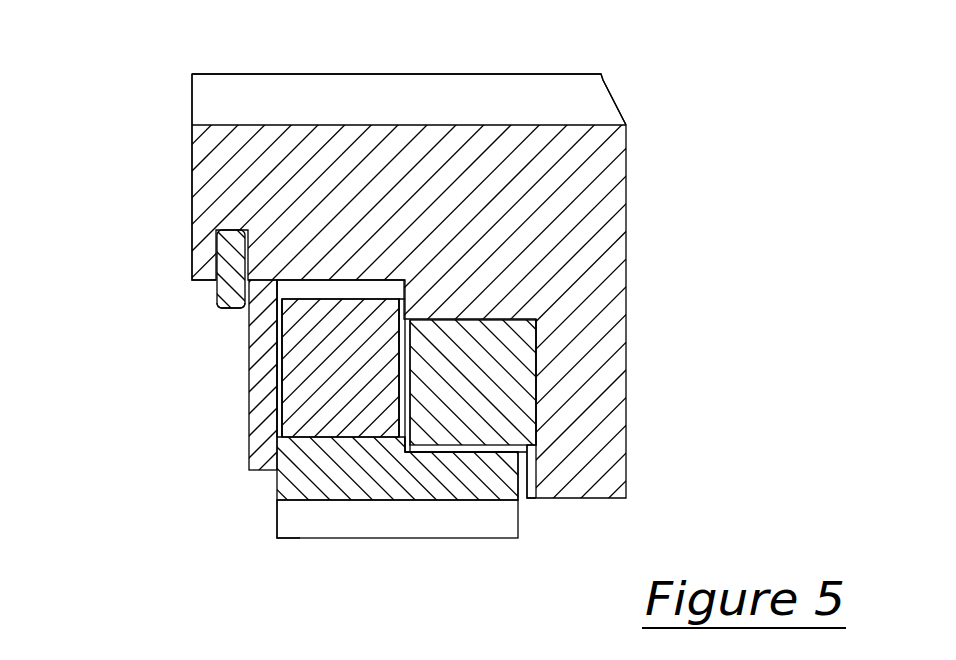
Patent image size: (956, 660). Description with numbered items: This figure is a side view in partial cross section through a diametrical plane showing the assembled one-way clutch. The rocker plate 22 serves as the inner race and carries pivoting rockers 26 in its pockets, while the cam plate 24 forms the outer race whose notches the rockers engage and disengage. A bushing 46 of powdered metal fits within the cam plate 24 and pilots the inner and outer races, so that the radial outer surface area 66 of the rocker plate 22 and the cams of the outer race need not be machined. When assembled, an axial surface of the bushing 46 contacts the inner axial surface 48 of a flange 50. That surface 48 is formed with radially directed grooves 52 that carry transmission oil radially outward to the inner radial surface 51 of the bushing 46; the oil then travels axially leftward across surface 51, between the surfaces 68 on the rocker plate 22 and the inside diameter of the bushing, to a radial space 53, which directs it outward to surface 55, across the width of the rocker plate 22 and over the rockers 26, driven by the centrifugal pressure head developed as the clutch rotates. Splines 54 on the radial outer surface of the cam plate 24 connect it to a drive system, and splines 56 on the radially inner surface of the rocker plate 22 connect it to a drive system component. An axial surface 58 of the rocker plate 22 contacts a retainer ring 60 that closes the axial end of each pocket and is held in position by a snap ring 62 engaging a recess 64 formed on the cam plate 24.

The rocker plate 22 is at (305, 474).
The cam plate 24 is at (212, 172).
The rocker 26 is at (293, 420).
The bushing 46 is at (502, 353).
The inner axial surface 48 is at (537, 412).
The flange 50 is at (615, 390).
The inner radial surface 51 is at (490, 448).
The radially directed grooves 52 is at (528, 460).
The radial space 53 is at (403, 383).
The splines 54 is at (540, 88).
The surface 55 is at (327, 283).
The splines 56 is at (443, 523).
The axial surface 58 is at (277, 520).
The retainer ring 60 is at (257, 387).
The snap ring 62 is at (230, 302).
The recess 64 is at (232, 276).
The radial outer surface area 66 is at (327, 433).
The surfaces 68 is at (436, 437).